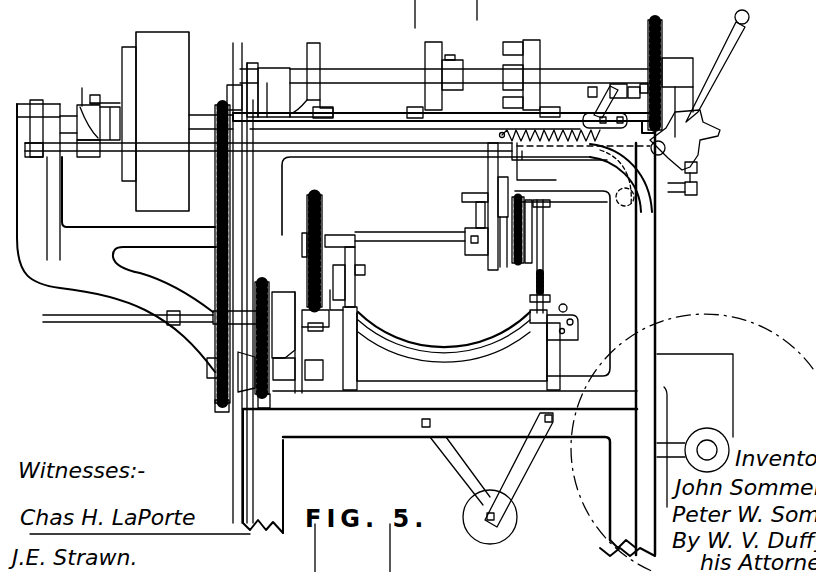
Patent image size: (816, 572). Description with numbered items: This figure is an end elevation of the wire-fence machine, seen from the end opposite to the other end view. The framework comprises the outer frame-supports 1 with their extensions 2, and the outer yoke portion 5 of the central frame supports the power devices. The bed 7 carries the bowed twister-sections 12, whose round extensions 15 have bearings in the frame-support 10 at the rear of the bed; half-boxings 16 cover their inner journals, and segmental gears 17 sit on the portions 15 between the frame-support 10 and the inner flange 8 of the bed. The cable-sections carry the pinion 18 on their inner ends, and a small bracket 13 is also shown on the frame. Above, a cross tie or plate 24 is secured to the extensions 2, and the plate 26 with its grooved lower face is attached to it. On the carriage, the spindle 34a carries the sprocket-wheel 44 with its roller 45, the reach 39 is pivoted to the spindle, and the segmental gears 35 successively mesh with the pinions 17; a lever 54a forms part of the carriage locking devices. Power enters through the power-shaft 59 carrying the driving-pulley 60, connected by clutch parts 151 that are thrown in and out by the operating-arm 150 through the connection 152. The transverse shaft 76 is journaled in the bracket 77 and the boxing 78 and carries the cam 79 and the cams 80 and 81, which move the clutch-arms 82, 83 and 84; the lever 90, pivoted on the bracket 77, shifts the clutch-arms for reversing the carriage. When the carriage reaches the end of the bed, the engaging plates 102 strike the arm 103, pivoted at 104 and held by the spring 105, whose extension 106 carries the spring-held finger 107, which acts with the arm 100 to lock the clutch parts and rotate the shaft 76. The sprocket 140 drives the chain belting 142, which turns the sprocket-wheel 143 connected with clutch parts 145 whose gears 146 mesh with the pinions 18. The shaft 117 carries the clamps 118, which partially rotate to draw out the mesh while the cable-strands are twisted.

The outer frame-supports 1 is at (395, 425).
The extensions 2 is at (640, 254).
The outer yoke portion 5 is at (100, 247).
The bed 7 is at (455, 352).
The inner flange 8 is at (350, 365).
The frame-support 10 is at (304, 394).
The twister-sections 12 is at (452, 347).
The bracket 13 is at (575, 323).
The round extensions 15 is at (320, 316).
The half-boxings 16 is at (292, 296).
The segmental gears 17 is at (346, 298).
The pinion 18 is at (269, 287).
The cross tie or plate 24 is at (493, 166).
The frame or plate 26 is at (468, 205).
The spindle 34a is at (421, 226).
The segmental gears 35 is at (323, 218).
The reach 39 is at (476, 245).
The sprocket-wheel 44 is at (516, 232).
The roller 45 is at (492, 262).
The lever 54a is at (365, 272).
The power-shaft 59 is at (201, 118).
The driving-pulley 60 is at (155, 121).
The transverse shaft 76 is at (585, 76).
The bracket 77 is at (700, 140).
The boxing 78 is at (274, 70).
The cam 79 is at (534, 40).
The cam 80 is at (435, 48).
The cam 81 is at (311, 54).
The clutch-arm 82 is at (567, 103).
The clutch-arm 83 is at (408, 113).
The clutch-arm 84 is at (330, 115).
The lever 90 is at (722, 72).
The arm 100 is at (660, 88).
The engaging plates 102 is at (541, 258).
The arm 103 is at (574, 205).
The pivot 104 is at (652, 212).
The spring 105 is at (544, 141).
The extension 106 is at (602, 112).
The spring-held finger 107 is at (662, 54).
The shaft 117 is at (707, 443).
The clamps 118 is at (693, 443).
The sprocket 140 is at (213, 132).
The chain belting 142 is at (217, 257).
The inner sprocket-wheel 143 is at (222, 390).
The clutch parts 145 is at (221, 406).
The gears 146 is at (263, 400).
The operating-arm 150 is at (113, 153).
The clutch parts 151 is at (75, 114).
The connection 152 is at (694, 190).